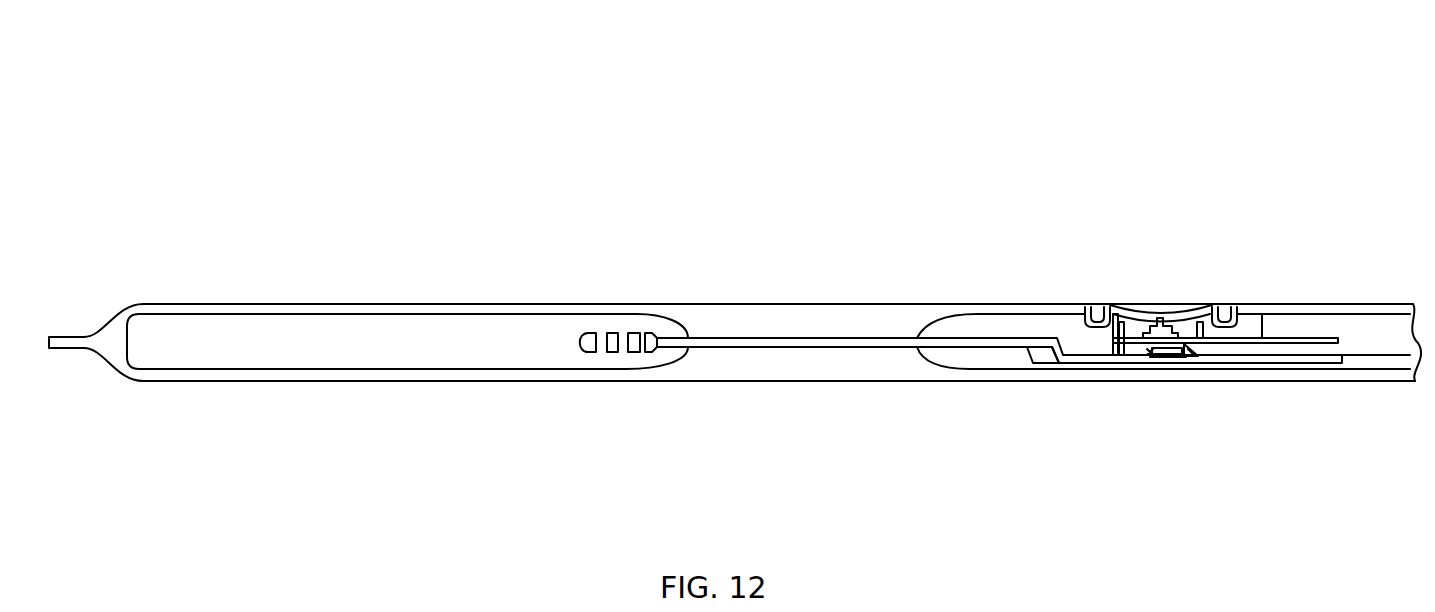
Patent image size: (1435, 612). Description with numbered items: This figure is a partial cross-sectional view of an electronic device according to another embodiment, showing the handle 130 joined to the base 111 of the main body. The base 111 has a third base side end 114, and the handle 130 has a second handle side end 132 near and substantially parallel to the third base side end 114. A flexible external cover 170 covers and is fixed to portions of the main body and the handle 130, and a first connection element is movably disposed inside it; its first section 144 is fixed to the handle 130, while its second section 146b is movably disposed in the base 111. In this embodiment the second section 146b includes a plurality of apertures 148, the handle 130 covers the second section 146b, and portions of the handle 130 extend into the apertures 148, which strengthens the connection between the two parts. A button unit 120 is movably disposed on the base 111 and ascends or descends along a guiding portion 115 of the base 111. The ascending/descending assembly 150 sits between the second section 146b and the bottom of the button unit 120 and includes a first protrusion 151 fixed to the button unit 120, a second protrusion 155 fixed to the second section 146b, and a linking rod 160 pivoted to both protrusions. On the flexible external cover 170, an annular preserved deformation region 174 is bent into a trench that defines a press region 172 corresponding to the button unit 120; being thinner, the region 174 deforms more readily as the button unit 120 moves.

The base 111 is at (1042, 328).
The third base side end 114 is at (923, 323).
The guiding portion 115 is at (1122, 312).
The button unit 120 is at (1160, 313).
The handle 130 is at (410, 337).
The second handle side end 132 is at (677, 323).
The first section 144 is at (1090, 360).
The second section 146b is at (583, 340).
The apertures 148 is at (623, 338).
The ascending/descending assembly 150 is at (1252, 246).
The first protrusion 151 is at (1147, 354).
The second protrusion 155 is at (1195, 356).
The linking rod 160 is at (1168, 357).
The flexible external cover 170 is at (835, 323).
The press region 172 is at (1185, 310).
The annular preserved deformation region 174 is at (1099, 308).